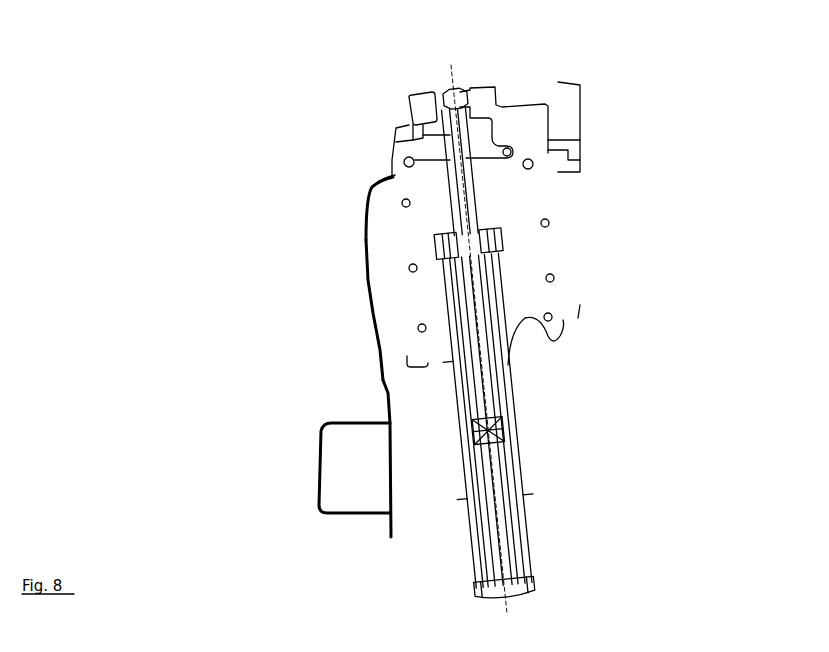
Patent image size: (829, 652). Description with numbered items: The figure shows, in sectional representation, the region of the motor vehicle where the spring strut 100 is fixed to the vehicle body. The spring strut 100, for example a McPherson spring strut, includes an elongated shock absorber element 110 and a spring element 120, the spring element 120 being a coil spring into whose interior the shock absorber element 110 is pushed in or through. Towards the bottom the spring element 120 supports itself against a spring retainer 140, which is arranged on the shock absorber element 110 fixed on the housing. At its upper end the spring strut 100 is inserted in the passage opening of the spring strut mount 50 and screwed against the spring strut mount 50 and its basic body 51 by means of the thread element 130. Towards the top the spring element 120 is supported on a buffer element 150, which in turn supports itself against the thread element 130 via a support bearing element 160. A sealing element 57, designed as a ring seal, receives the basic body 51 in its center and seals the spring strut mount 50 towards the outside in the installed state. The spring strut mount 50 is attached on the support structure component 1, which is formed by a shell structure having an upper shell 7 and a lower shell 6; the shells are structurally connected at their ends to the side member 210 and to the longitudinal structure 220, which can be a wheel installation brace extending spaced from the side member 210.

The support structure component 1 is at (357, 313).
The shell 6 is at (367, 230).
The shell 7 is at (370, 287).
The sealing element 57 is at (381, 180).
The spring strut mount 50 is at (505, 96).
The basic body 51 is at (409, 99).
The thread element 130 is at (438, 98).
The support bearing element 160 is at (427, 125).
The buffer element 150 is at (405, 142).
The longitudinal structure 220 is at (565, 150).
The spring element 120 is at (548, 226).
The spring retainer 140 is at (558, 333).
The shock absorber element 110 is at (500, 421).
The spring strut 100 is at (558, 315).
The side member 210 is at (335, 452).